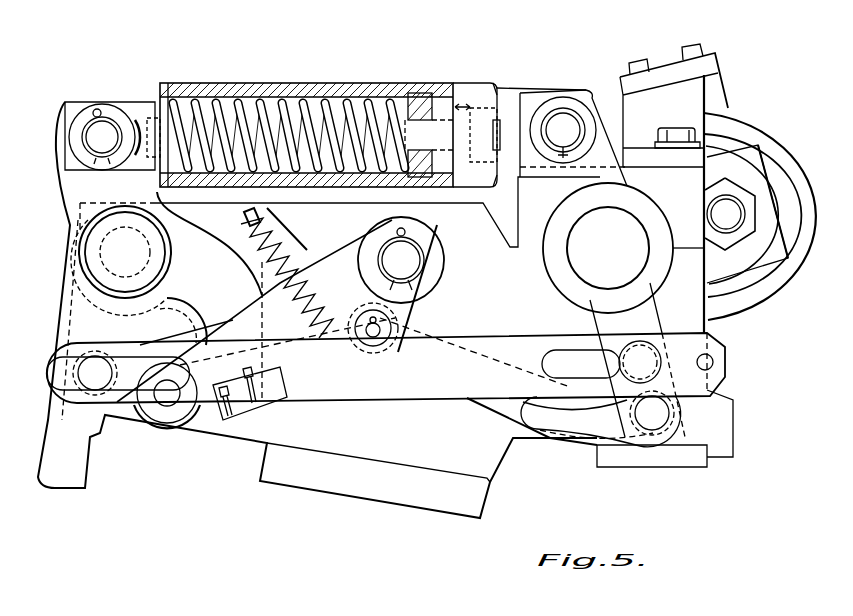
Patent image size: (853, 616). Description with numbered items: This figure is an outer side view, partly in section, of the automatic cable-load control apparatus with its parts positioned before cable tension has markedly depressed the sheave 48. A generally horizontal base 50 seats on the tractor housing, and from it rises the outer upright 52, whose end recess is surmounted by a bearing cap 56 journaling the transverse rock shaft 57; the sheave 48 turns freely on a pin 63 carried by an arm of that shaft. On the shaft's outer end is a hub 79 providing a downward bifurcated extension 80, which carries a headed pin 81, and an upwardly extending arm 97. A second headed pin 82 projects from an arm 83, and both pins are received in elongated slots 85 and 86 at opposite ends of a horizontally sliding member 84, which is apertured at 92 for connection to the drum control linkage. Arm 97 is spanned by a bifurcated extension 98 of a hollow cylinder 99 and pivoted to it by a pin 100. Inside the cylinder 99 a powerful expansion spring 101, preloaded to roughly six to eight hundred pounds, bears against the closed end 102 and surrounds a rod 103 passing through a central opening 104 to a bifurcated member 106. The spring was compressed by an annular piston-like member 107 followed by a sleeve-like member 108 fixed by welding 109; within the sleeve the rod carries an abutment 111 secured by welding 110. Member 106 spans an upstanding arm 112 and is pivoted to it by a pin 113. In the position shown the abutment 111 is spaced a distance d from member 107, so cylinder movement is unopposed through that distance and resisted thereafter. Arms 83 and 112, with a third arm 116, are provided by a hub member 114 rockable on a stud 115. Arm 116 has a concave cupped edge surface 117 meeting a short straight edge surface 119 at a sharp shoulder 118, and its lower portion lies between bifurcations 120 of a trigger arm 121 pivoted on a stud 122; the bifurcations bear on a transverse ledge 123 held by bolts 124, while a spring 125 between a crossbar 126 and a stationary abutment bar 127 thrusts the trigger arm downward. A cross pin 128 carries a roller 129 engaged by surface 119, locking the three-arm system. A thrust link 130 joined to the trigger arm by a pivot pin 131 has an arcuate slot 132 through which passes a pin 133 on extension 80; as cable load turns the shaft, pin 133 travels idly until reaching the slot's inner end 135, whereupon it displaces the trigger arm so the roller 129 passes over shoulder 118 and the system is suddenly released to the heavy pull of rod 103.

The sheave 48 is at (800, 152).
The base 50 is at (483, 452).
The outer upright 52 is at (371, 296).
The bearing cap 56 is at (674, 123).
The rock shaft 57 is at (623, 248).
The pin 63 is at (735, 222).
The hub 79 is at (656, 278).
The bifurcated downward extension 80 is at (653, 317).
The headed pin 81 is at (650, 360).
The headed pin 82 is at (102, 384).
The arm 83 is at (72, 320).
The elongated member 84 is at (358, 390).
The elongated slot 85 is at (560, 355).
The elongated slot 86 is at (50, 373).
The aperture 92 is at (713, 362).
The upwardly extending arm 97 is at (553, 187).
The bifurcated extension 98 is at (518, 100).
The cylinder 99 is at (325, 100).
The pin 100 is at (570, 118).
The expansion spring 101 is at (265, 100).
The closed end 102 is at (155, 120).
The rod 103 is at (217, 93).
The central opening 104 is at (160, 203).
The bifurcated member 106 is at (68, 112).
The annular piston-like member 107 is at (420, 100).
The sleeve-like member 108 is at (462, 97).
The welding 109 is at (497, 93).
The welding 110 is at (509, 138).
The abutment 111 is at (512, 108).
The upstanding arm 112 is at (65, 197).
The pin 113 is at (92, 137).
The hub member 114 is at (88, 250).
The stud 115 is at (125, 252).
The third arm 116 is at (195, 270).
The concave cupped edge surface 117 is at (197, 310).
The shoulder 118 is at (192, 363).
The straight edge surface 119 is at (206, 383).
The bifurcations 120 is at (243, 327).
The trigger arm 121 is at (325, 255).
The stud 122 is at (413, 257).
The transverse ledge 123 is at (240, 418).
The bolts 124 is at (253, 405).
The spring 125 is at (312, 282).
The crossbar 126 is at (300, 357).
The abutment bar 127 is at (247, 218).
The cross pin 128 is at (164, 406).
The roller 129 is at (118, 318).
The thrust link 130 is at (483, 357).
The pivot pin 131 is at (390, 330).
The arcuate slot 132 is at (577, 420).
The pin 133 is at (652, 420).
The inner end of slot 135 is at (527, 400).
The distance d is at (462, 107).